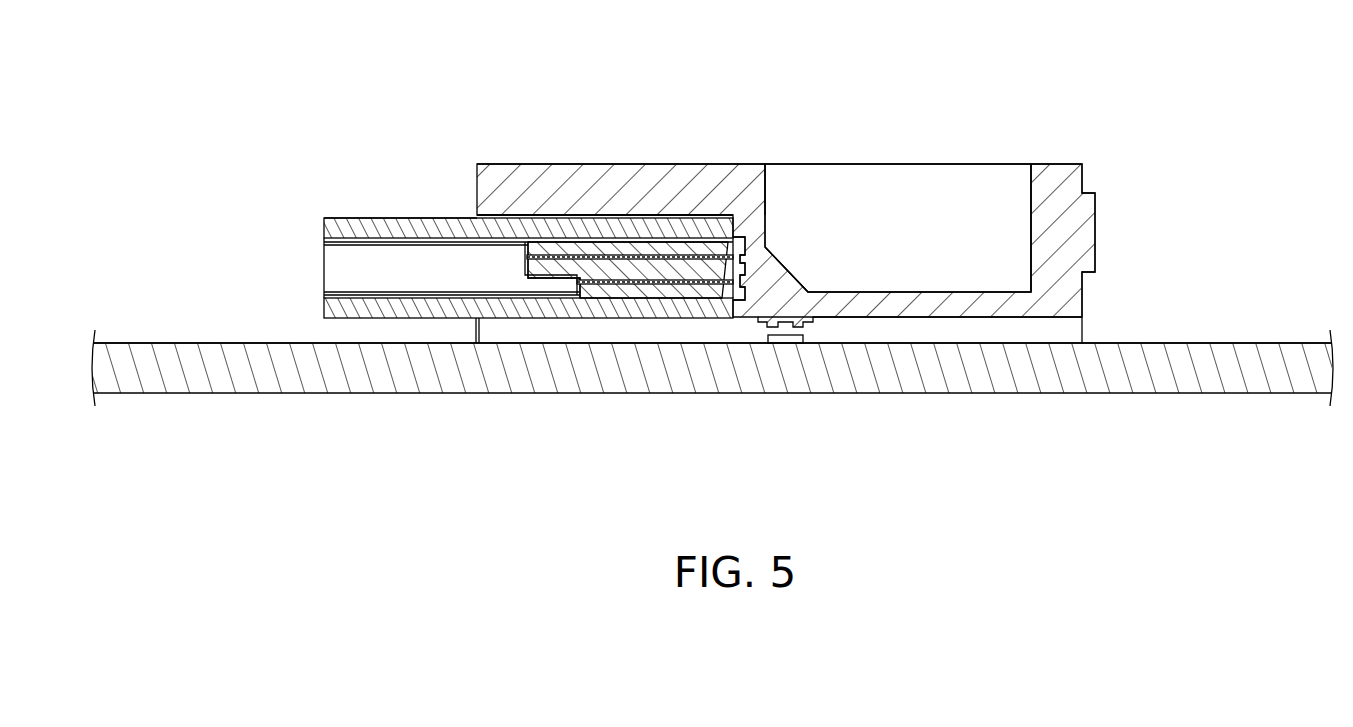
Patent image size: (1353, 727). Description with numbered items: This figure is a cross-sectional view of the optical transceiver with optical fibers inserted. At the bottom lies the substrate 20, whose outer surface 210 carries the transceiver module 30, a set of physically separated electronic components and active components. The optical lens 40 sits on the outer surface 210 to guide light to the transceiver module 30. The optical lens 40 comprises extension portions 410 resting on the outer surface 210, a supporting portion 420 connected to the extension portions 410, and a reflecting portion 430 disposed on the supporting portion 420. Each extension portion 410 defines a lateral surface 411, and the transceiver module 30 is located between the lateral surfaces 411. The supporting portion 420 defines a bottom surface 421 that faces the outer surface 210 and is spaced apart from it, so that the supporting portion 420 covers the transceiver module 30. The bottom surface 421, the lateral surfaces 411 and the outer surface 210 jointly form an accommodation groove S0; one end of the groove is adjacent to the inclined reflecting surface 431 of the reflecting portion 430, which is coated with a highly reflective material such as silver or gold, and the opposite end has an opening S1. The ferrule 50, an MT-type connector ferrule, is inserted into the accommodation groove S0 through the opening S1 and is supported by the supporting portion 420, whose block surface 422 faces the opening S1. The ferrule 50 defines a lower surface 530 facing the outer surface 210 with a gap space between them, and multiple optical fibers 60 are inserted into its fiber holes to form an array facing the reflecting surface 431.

The substrate 20 is at (327, 396).
The outer surface 210 is at (195, 341).
The transceiver module 30 is at (788, 339).
The optical lens 40 is at (892, 86).
The extension portion 410 is at (1086, 327).
The lateral surface 411 is at (543, 328).
The supporting portion 420 is at (1056, 162).
The bottom surface 421 is at (592, 226).
The block surface 422 is at (734, 240).
The reflecting portion 430 is at (812, 248).
The reflecting surface 431 is at (773, 247).
The ferrule 50 is at (341, 213).
The lower surface 530 is at (497, 320).
The optical fibers 60 is at (543, 255).
The accommodation groove S0 is at (643, 211).
The opening S1 is at (474, 217).